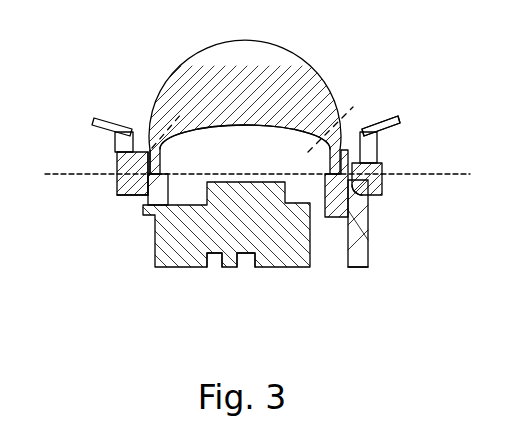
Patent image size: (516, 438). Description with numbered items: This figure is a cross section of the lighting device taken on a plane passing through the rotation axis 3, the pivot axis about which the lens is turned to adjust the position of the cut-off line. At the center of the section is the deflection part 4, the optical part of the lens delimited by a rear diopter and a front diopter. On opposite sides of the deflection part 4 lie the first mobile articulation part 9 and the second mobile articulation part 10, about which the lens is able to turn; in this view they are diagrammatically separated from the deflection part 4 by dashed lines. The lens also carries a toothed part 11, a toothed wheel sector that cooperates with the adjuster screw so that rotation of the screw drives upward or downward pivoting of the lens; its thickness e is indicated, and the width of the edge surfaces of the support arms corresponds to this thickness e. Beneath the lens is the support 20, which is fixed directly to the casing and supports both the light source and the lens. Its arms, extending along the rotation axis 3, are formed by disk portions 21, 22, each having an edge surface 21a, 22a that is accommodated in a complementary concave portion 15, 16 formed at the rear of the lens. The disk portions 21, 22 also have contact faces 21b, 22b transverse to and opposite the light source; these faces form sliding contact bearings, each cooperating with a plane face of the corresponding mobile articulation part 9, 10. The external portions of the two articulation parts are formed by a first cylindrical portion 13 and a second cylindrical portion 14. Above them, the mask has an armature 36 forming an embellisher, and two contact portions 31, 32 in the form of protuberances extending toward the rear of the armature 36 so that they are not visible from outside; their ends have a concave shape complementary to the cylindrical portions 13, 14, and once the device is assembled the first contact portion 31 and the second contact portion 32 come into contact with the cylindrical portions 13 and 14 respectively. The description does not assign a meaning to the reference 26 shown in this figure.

The rotation axis 3 is at (57, 176).
The deflection part 4 is at (247, 80).
The first mobile articulation part 9 is at (358, 126).
The second mobile articulation part 10 is at (135, 127).
The toothed part 11 is at (360, 240).
The first cylindrical portion 13 is at (382, 188).
The second cylindrical portion 14 is at (130, 168).
The concave portion 15 is at (322, 178).
The concave portion 16 is at (160, 145).
The support 20 is at (157, 250).
The disk portion 21 is at (336, 212).
The edge surface 21a is at (338, 160).
The contact face 21b is at (355, 177).
The disk portion 22 is at (148, 196).
The edge surface 22a is at (150, 152).
The contact face 22b is at (142, 161).
The channel 26 is at (245, 183).
The first contact portion 31 is at (376, 145).
The second contact portion 32 is at (115, 153).
The armature 36 is at (386, 122).
The thickness e is at (358, 267).